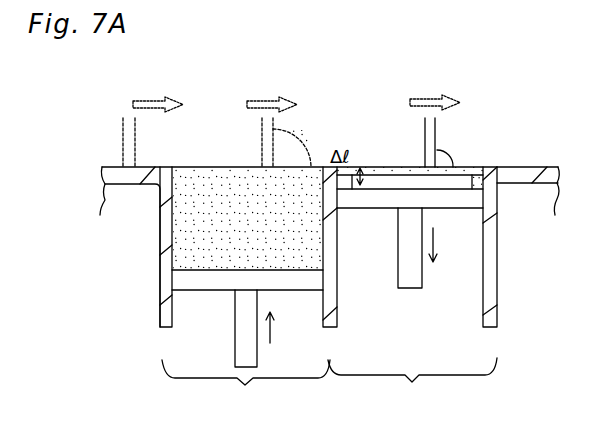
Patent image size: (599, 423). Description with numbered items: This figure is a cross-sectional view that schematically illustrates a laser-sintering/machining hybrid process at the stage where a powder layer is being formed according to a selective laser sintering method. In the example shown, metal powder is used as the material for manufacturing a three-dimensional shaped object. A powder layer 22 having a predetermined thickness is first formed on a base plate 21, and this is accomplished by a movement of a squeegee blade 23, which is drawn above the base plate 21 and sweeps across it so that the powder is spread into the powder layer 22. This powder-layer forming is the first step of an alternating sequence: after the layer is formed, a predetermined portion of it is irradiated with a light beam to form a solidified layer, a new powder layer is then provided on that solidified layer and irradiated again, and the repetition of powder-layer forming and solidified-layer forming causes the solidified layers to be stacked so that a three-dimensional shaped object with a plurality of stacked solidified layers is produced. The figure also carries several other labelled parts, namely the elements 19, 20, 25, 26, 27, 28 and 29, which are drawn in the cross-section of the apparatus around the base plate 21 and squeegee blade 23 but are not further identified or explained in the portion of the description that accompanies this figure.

The filter chamber / liquid region 19 is at (263, 228).
The outlet pipe 20 is at (460, 196).
The base plate 21 is at (377, 191).
The powder layer 22 is at (388, 170).
The squeegee blade 23 is at (437, 127).
The bottom plate 25 is at (210, 283).
The side wall 26 is at (160, 268).
The side wall 27 is at (495, 284).
The first chamber section 28 is at (246, 352).
The second chamber section 29 is at (412, 385).